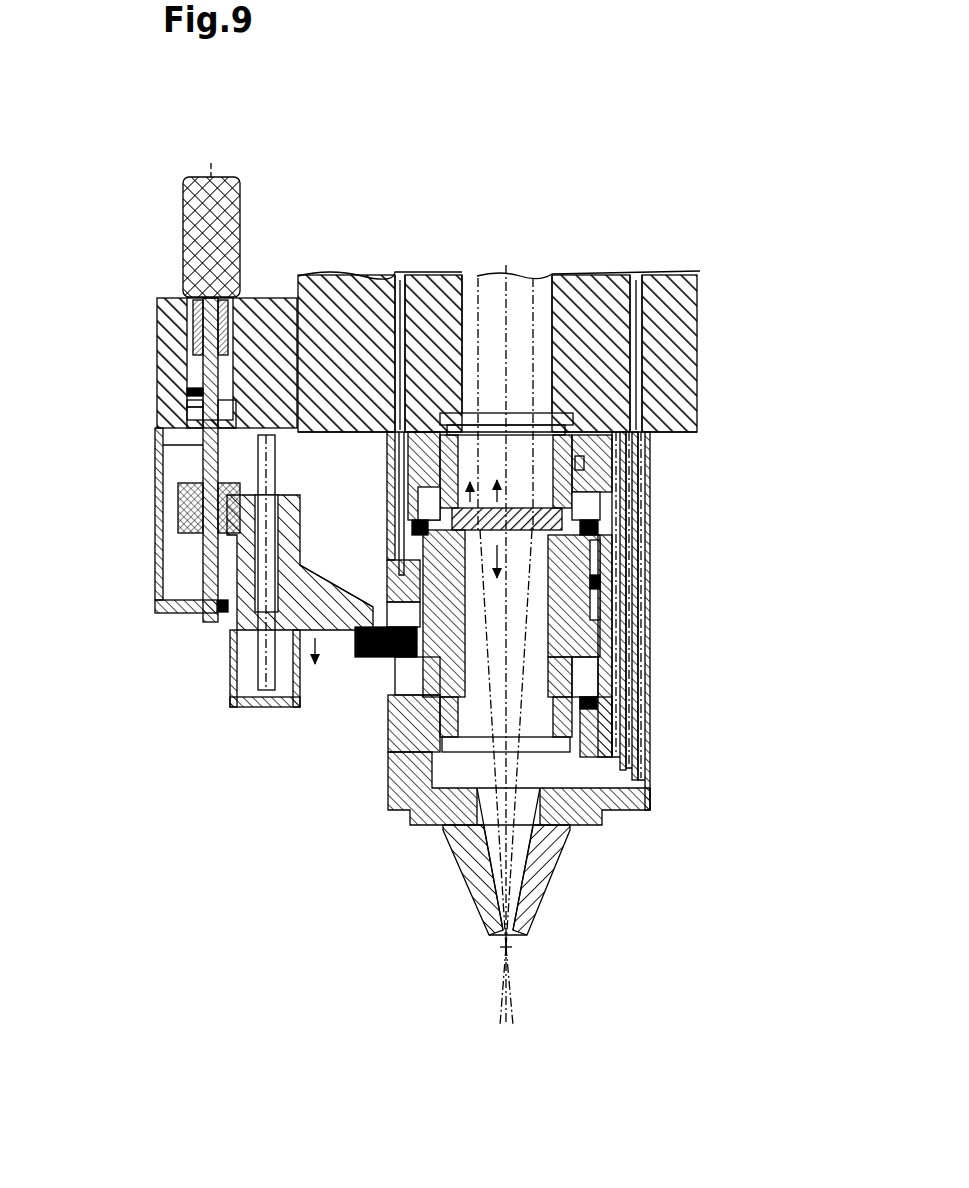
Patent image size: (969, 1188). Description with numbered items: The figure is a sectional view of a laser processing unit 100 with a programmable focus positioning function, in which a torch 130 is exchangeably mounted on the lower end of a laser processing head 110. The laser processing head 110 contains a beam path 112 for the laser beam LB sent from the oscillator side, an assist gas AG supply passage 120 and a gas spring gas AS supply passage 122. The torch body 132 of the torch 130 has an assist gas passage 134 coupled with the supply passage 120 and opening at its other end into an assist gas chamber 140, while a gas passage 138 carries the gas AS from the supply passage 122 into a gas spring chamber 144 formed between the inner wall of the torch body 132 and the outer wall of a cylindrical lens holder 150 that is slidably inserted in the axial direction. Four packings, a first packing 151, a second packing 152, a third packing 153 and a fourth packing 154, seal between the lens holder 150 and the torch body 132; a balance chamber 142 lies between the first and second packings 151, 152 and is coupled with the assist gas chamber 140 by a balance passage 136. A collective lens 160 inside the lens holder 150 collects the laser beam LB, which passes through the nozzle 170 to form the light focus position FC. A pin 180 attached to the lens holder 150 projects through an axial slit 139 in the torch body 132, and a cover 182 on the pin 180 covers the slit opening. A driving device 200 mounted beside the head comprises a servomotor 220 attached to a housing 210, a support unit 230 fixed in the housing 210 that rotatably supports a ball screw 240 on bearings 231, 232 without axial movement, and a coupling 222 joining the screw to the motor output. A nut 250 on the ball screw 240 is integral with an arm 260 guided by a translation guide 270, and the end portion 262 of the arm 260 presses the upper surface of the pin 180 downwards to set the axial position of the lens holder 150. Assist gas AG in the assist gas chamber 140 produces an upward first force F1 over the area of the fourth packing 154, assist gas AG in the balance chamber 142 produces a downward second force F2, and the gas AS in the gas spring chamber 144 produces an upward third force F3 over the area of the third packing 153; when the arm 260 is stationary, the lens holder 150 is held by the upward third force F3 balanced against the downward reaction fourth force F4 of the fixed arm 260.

The laser processing unit 100 is at (746, 171).
The laser processing head 110 is at (680, 367).
The beam path 112 is at (540, 303).
The assist gas supply passage 120 is at (645, 278).
The gas spring gas supply passage 122 is at (398, 276).
The torch 130 is at (756, 603).
The torch body 132 is at (650, 525).
The assist gas passage 134 is at (640, 565).
The balance passage 136 is at (593, 757).
The gas passage 138 is at (400, 450).
The slit 139 is at (406, 700).
The assist gas chamber 140 is at (452, 777).
The balance chamber 142 is at (425, 500).
The gas spring chamber 144 is at (408, 557).
The lens holder 150 is at (590, 642).
The first packing 151 is at (580, 464).
The second packing 152 is at (598, 503).
The third packing 153 is at (600, 585).
The fourth packing 154 is at (583, 708).
The collective lens 160 is at (597, 520).
The nozzle 170 is at (547, 880).
The pin 180 is at (376, 658).
The cover 182 is at (400, 672).
The driving device 200 is at (83, 144).
The housing 210 is at (178, 367).
The servomotor 220 is at (183, 264).
The coupling 222 is at (193, 327).
The support unit 230 is at (178, 414).
The bearing 231 is at (192, 403).
The bearing 232 is at (213, 606).
The ball screw 240 is at (205, 463).
The nut 250 is at (188, 512).
The arm 260 is at (247, 617).
The end portion 262 is at (372, 597).
The translation guide 270 is at (262, 682).
The laser beam LB is at (530, 313).
The gas spring gas AS is at (397, 260).
The assist gas AG is at (625, 248).
The light focus position FC is at (506, 947).
The first force F1 is at (515, 492).
The second force F2 is at (515, 561).
The third force F3 is at (475, 481).
The fourth force F4 is at (316, 664).